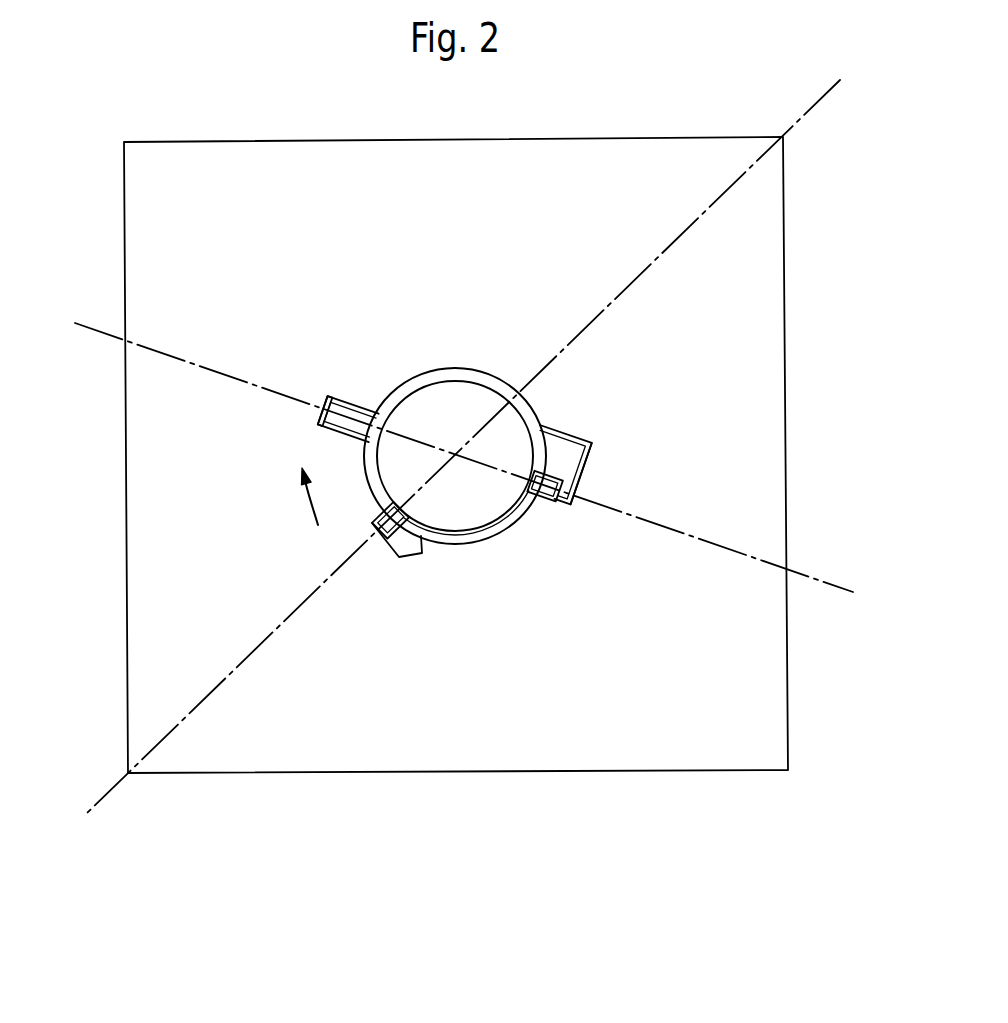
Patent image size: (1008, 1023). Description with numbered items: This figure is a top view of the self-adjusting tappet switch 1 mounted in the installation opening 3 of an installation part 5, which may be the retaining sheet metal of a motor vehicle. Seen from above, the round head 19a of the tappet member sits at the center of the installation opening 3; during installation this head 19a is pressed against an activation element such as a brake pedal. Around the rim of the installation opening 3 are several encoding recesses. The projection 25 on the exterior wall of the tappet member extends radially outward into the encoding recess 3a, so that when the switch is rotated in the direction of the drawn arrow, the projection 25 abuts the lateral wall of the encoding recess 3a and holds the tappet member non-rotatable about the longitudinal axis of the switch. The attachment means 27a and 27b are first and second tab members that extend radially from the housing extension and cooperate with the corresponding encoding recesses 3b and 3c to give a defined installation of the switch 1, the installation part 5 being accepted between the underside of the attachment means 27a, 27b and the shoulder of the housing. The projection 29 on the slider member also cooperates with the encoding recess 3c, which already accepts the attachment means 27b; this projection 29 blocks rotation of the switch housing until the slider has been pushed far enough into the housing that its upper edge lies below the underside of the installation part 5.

The self-adjusting tappet switch 1 is at (840, 94).
The installation opening 3 is at (77, 340).
The encoding recess 3a is at (390, 549).
The encoding recess 3b is at (316, 422).
The encoding recess 3c is at (588, 461).
The installation part 5 is at (556, 697).
The head of the tappet member 19a is at (462, 397).
The projection 25 is at (386, 505).
The attachment means 27a is at (355, 408).
The attachment means 27b is at (562, 443).
The projection 29 is at (537, 503).